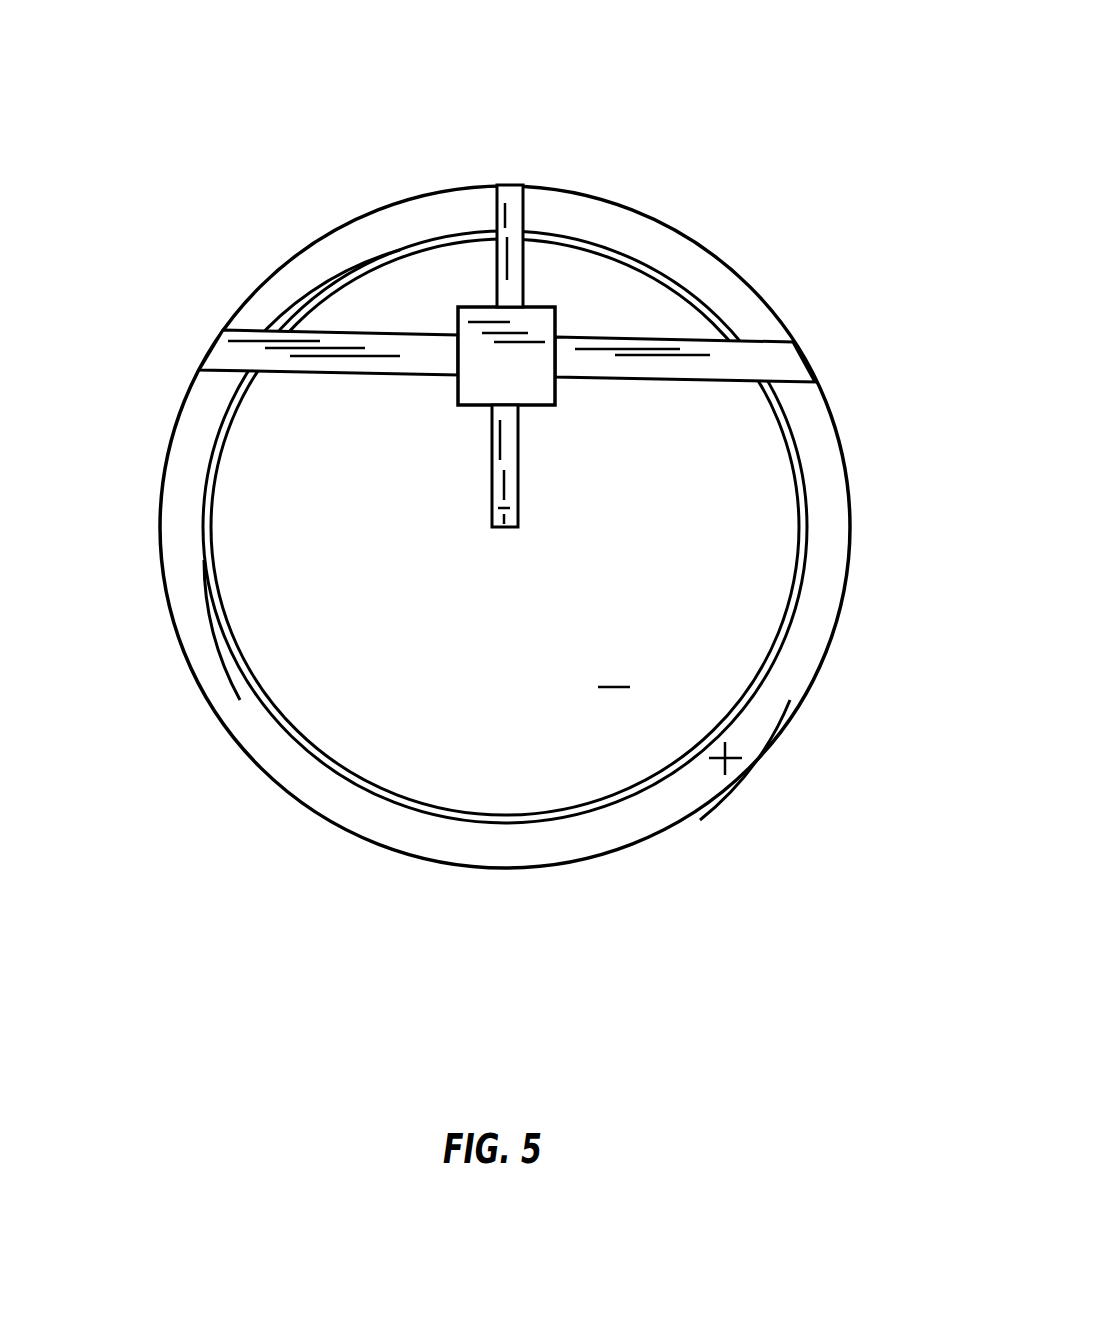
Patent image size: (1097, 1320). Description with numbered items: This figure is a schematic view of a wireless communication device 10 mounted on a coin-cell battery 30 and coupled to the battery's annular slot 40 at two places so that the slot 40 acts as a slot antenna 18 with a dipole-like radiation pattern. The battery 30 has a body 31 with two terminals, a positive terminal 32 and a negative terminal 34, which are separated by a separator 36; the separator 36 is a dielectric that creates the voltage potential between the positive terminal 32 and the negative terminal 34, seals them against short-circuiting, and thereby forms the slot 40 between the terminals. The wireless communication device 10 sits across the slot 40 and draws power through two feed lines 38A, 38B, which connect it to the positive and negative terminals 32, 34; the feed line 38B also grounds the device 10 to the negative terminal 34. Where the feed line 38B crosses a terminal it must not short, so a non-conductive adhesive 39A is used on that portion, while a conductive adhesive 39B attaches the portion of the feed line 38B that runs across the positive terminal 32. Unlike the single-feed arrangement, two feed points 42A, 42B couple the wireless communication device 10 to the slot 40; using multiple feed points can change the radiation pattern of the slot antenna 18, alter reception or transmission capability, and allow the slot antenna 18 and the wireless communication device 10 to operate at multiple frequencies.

The battery 30 is at (504, 448).
The body 31 is at (697, 810).
The positive terminal 32 is at (822, 510).
The negative terminal 34 is at (737, 570).
The separator 36 is at (743, 703).
The slot 40 is at (233, 648).
The slot antenna 18 is at (318, 288).
The wireless communication device 10 is at (482, 355).
The feed line 38A is at (571, 191).
The feed line 38B is at (505, 527).
The non-conductive adhesive 39A is at (510, 288).
The conductive adhesive 39B is at (512, 198).
The feed point 42A is at (307, 373).
The feed point 42B is at (647, 335).